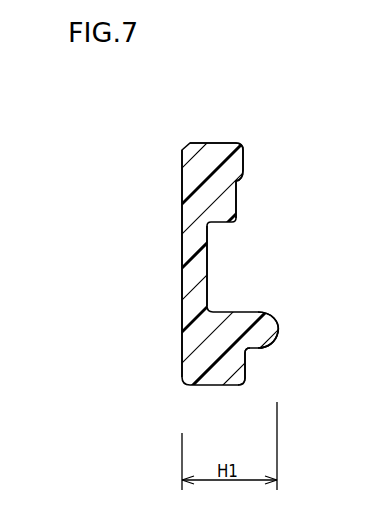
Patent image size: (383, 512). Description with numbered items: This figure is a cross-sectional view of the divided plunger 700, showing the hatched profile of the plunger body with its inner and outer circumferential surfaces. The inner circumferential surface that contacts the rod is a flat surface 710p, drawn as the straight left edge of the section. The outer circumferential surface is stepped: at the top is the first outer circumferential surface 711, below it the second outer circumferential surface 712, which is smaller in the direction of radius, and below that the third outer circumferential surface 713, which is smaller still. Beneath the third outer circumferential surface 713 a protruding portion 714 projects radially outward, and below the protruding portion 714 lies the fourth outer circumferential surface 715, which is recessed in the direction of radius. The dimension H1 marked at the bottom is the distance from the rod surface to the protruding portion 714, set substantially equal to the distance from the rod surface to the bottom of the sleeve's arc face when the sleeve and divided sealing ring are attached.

The divided plunger 700 is at (311, 104).
The flat surface 710p is at (183, 201).
The first outer circumferential surface 711 is at (243, 161).
The second outer circumferential surface 712 is at (236, 200).
The third outer circumferential surface 713 is at (207, 258).
The protruding portion 714 is at (278, 330).
The fourth outer circumferential surface 715 is at (246, 358).